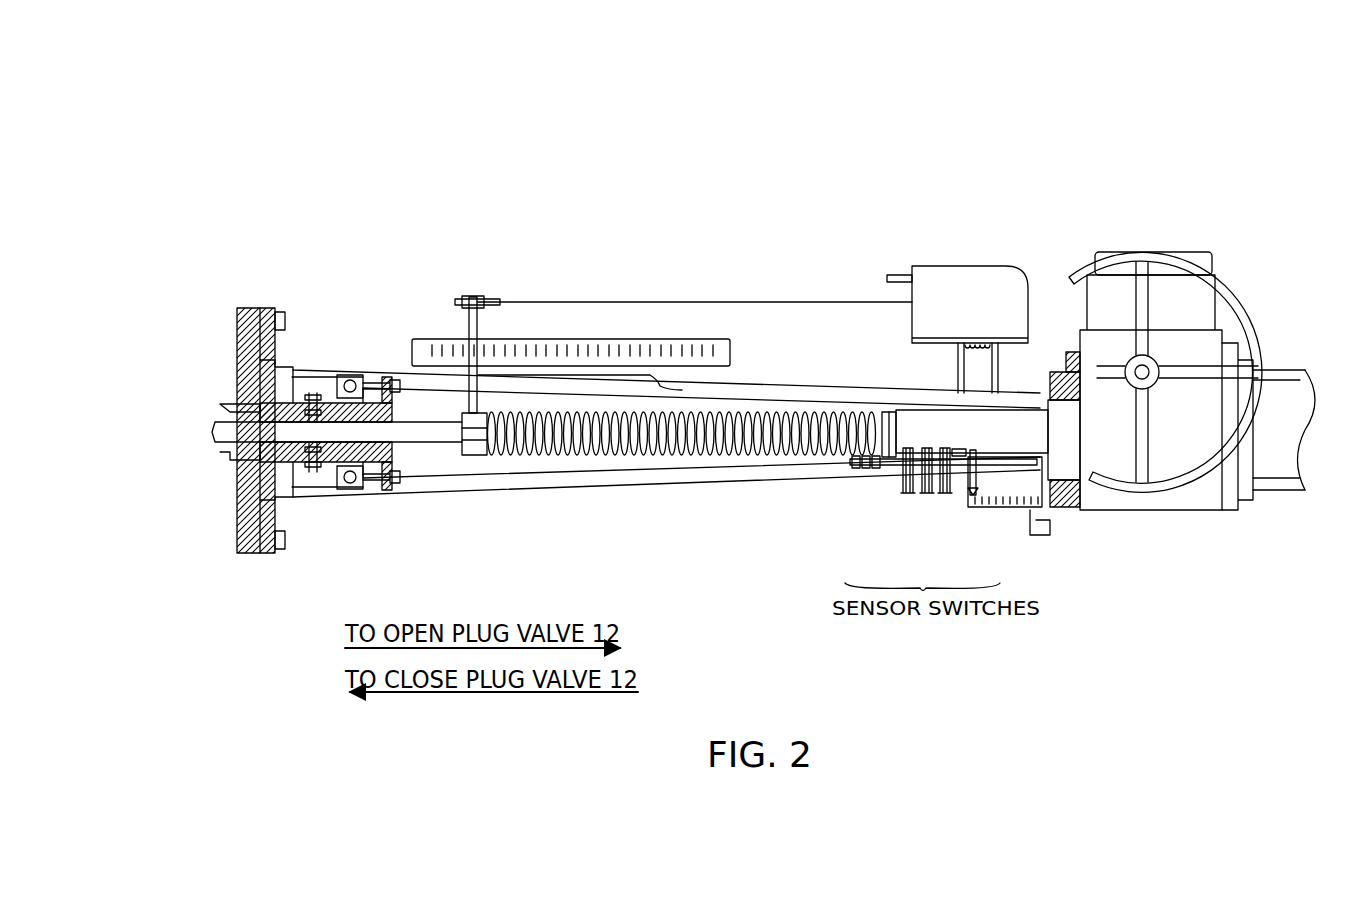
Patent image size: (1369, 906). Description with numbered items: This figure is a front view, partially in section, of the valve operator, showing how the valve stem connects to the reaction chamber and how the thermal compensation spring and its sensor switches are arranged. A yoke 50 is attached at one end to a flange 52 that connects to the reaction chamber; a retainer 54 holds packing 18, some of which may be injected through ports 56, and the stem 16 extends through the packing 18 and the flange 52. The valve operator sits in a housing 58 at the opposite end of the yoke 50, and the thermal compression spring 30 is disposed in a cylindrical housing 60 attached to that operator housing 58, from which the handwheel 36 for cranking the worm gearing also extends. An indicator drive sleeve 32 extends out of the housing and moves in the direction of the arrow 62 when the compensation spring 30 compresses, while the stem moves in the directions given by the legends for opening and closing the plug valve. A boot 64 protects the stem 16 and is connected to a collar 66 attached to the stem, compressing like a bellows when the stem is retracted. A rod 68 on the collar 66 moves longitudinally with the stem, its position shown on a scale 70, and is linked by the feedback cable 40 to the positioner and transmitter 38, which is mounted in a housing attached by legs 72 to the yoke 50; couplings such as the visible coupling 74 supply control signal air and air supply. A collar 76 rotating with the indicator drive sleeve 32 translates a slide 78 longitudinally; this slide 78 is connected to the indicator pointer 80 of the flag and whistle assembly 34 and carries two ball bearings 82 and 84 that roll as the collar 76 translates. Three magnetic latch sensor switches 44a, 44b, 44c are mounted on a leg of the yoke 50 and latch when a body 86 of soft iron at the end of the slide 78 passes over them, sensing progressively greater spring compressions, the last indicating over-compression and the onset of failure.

The stem 16 is at (425, 420).
The packing 18 is at (377, 392).
The thermal compression spring 30 is at (1270, 368).
The indicator drive sleeve 32 is at (877, 442).
The flag and whistle assembly 34 is at (1000, 507).
The handwheel 36 is at (1135, 495).
The positioner and transmitter 38 is at (925, 262).
The feedback cable 40 is at (655, 300).
The sensor switch 44a is at (908, 495).
The sensor switch 44b is at (927, 495).
The sensor switch 44c is at (945, 495).
The yoke 50 is at (745, 380).
The flange 52 is at (270, 553).
The retainer 54 is at (392, 485).
The ports 56 is at (313, 392).
The housing 58 is at (1112, 253).
The cylindrical housing 60 is at (1282, 490).
The arrow 62 is at (935, 430).
The boot 64 is at (632, 455).
The collar 66 is at (490, 455).
The rod 68 is at (478, 328).
The scale 70 is at (655, 342).
The legs 72 is at (958, 358).
The coupling 74 is at (890, 275).
The collar 76 is at (1005, 410).
The slide 78 is at (885, 470).
The indicator pointer 80 is at (978, 478).
The ball bearing 82 is at (985, 450).
The ball bearing 84 is at (1005, 456).
The body of magnetic material 86 is at (860, 470).